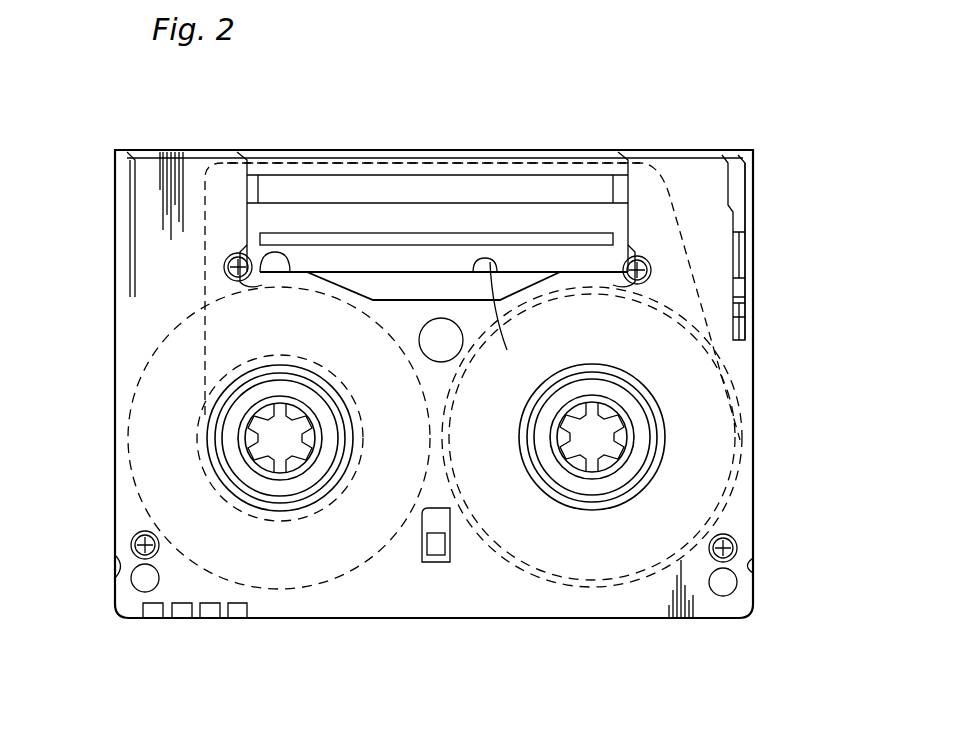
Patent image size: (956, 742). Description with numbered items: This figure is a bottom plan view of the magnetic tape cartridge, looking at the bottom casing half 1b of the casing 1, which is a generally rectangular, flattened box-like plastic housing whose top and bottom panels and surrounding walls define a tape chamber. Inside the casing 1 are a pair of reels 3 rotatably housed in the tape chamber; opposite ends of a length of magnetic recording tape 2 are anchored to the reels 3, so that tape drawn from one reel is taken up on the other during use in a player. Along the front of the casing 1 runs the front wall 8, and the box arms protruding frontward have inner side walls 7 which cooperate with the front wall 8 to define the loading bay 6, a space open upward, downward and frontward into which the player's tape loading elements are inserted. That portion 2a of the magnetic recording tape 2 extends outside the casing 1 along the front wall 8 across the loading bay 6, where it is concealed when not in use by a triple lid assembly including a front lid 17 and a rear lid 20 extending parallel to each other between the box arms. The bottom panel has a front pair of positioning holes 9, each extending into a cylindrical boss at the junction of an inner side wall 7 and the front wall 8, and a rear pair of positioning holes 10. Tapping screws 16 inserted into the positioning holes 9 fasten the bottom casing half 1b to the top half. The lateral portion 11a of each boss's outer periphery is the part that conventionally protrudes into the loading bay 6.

The casing 1 is at (757, 427).
The bottom casing half 1b is at (664, 608).
The magnetic recording tape 2 is at (672, 195).
The portion of the magnetic recording tape 2a is at (312, 163).
The reels 3 is at (318, 578).
The loading bay 6 is at (375, 200).
The inner side walls 7 is at (259, 175).
The front wall 8 is at (512, 319).
The positioning holes of the front pair 9 is at (224, 270).
The positioning holes of the rear pair 10 is at (162, 541).
The lateral portion of the outer periphery of the cylindrical boss 11a is at (288, 275).
The tapping screws 16 is at (243, 287).
The front lid 17 is at (500, 150).
The rear lid 20 is at (576, 198).